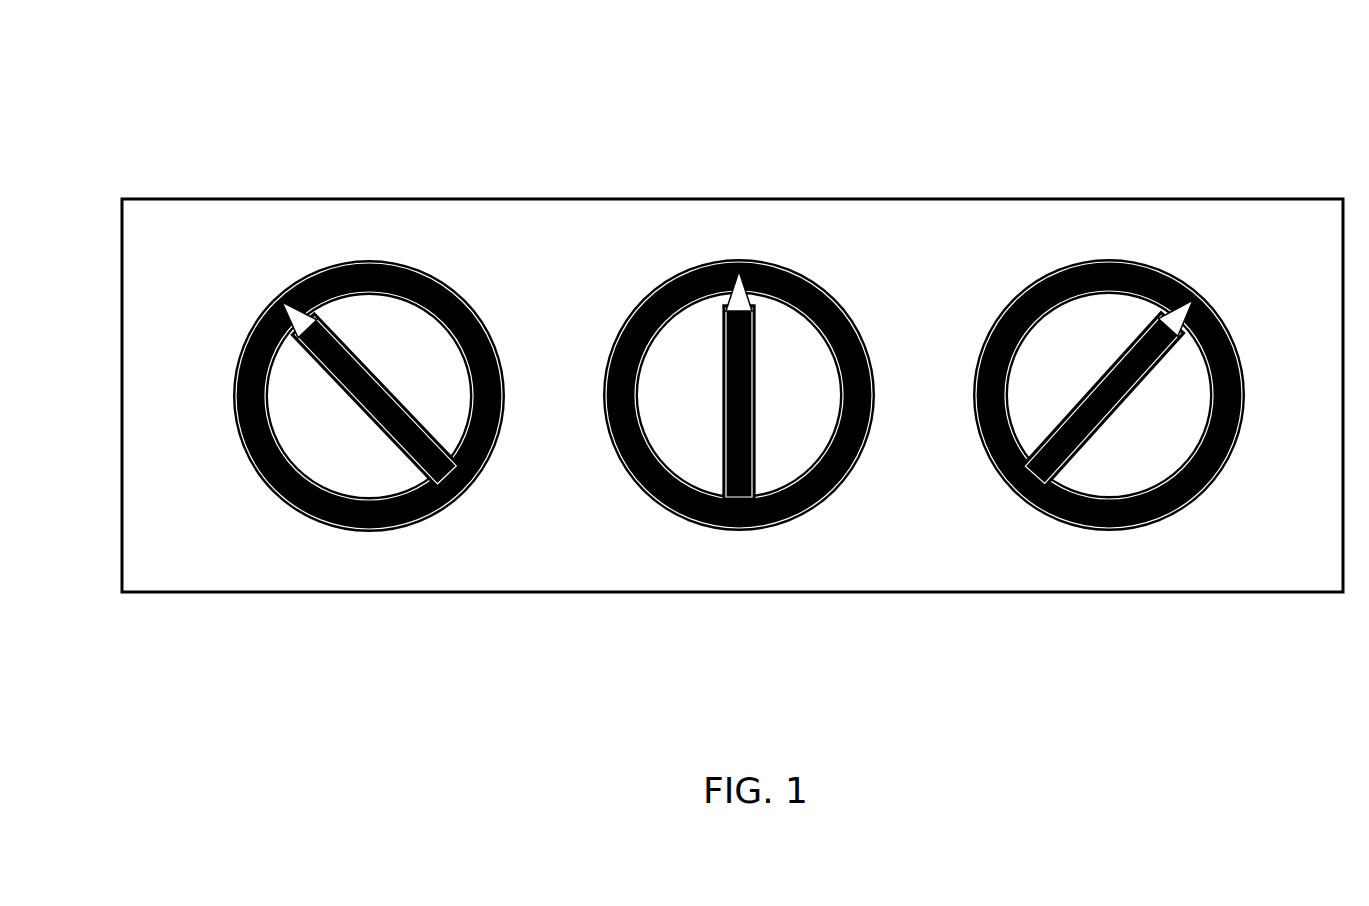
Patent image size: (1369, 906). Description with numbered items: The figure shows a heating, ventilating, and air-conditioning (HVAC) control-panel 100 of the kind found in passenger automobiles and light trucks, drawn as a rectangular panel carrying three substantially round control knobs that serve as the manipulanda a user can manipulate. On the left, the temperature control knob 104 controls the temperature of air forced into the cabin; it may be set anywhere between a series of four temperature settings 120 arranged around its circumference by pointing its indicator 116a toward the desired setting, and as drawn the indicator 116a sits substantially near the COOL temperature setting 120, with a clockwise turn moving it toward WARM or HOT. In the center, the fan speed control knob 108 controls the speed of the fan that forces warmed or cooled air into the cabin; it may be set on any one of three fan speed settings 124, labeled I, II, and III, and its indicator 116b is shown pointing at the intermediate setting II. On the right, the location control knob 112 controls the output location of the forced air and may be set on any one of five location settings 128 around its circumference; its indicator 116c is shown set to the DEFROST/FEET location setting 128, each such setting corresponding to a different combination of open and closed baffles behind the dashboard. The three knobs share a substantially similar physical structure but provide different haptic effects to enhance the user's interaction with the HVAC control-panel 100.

The HVAC control-panel 100 is at (766, 160).
The temperature control knob 104 is at (369, 464).
The fan speed control knob 108 is at (739, 463).
The location control knob 112 is at (1062, 464).
The indicator 116a is at (310, 327).
The indicator 116b is at (737, 313).
The indicator 116c is at (1167, 328).
The temperature settings 120 is at (197, 272).
The fan speed settings 124 is at (634, 236).
The location settings 128 is at (1158, 237).